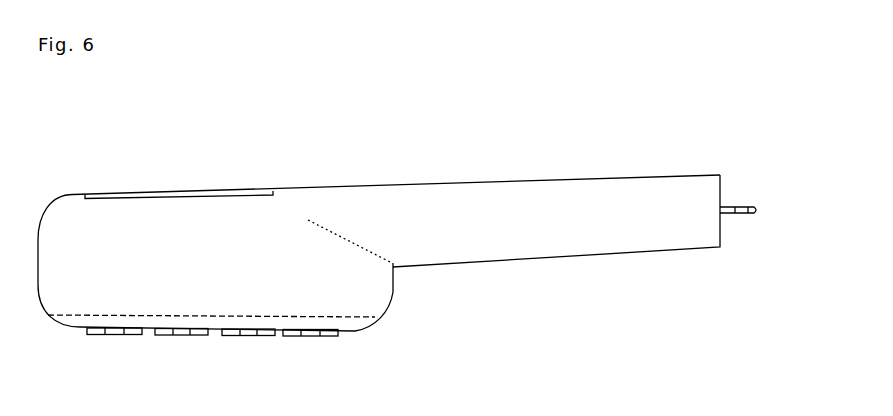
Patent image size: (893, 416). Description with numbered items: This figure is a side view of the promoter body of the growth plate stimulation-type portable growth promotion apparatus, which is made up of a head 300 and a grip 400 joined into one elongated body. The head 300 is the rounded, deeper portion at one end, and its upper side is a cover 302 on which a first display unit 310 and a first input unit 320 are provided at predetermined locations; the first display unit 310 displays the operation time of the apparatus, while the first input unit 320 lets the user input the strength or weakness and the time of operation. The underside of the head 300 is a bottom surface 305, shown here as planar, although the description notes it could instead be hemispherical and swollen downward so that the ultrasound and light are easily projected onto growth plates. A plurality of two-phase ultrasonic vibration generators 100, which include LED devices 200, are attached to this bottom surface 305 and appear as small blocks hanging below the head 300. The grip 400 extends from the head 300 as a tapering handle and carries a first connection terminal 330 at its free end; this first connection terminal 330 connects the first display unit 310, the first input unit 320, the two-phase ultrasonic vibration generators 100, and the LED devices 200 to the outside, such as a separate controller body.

The head 300 is at (283, 163).
The first display unit 310 is at (127, 173).
The first input unit 320 is at (172, 179).
The grip 400 is at (535, 168).
The first connection terminal 330 is at (748, 207).
The cover 302 is at (372, 288).
The bottom surface 305 is at (340, 327).
The two-phase ultrasonic vibration generator 100 is at (268, 336).
The LED device 200 is at (247, 336).